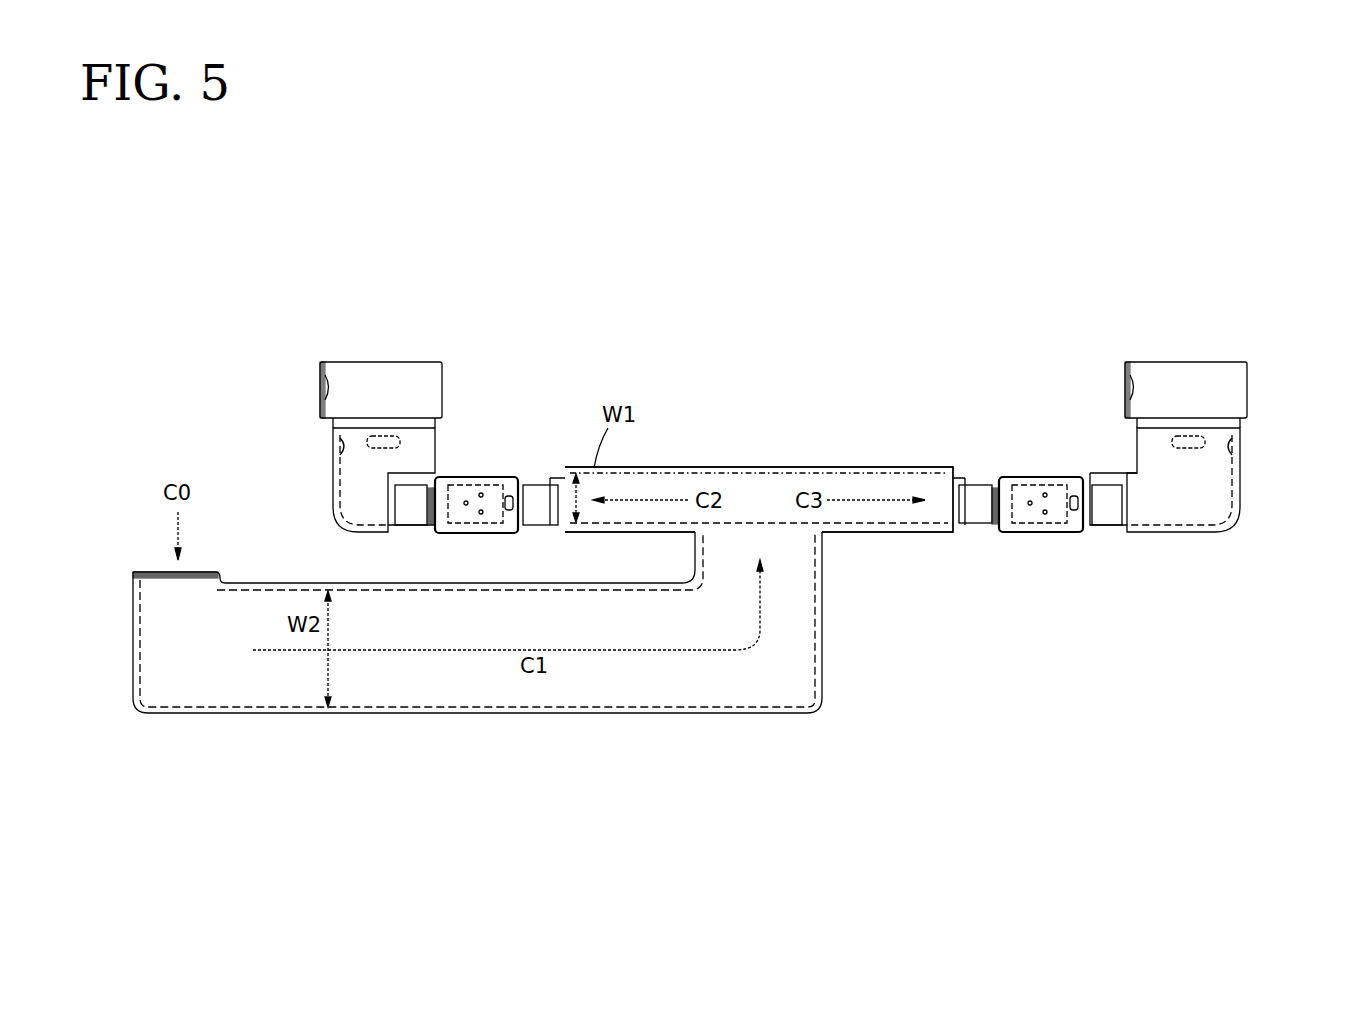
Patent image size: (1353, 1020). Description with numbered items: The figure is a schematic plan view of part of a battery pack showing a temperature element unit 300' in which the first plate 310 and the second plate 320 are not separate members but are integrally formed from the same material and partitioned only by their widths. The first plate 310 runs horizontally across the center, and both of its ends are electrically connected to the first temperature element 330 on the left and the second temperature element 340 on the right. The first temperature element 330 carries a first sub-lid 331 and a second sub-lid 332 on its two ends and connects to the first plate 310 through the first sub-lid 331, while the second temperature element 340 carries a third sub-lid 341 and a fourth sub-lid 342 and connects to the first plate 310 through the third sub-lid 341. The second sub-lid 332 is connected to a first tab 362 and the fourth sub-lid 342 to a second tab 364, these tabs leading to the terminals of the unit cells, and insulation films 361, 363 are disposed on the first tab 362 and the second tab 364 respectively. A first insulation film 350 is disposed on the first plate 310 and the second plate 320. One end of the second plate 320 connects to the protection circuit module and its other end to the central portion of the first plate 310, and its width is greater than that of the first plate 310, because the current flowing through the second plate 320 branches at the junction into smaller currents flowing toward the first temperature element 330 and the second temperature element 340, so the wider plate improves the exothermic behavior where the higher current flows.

The temperature element unit 300' is at (831, 366).
The first plate 310 is at (848, 467).
The second plate 320 is at (630, 712).
The first temperature element 330 is at (484, 462).
The first sub-lid 331 is at (540, 513).
The second sub-lid 332 is at (412, 513).
The second temperature element 340 is at (1044, 462).
The third sub-lid 341 is at (972, 515).
The fourth sub-lid 342 is at (1106, 515).
The first insulation film 350 is at (750, 467).
The insulation film 361 is at (333, 461).
The first tab 362 is at (378, 368).
The insulation film 363 is at (1240, 460).
The second tab 364 is at (1190, 368).